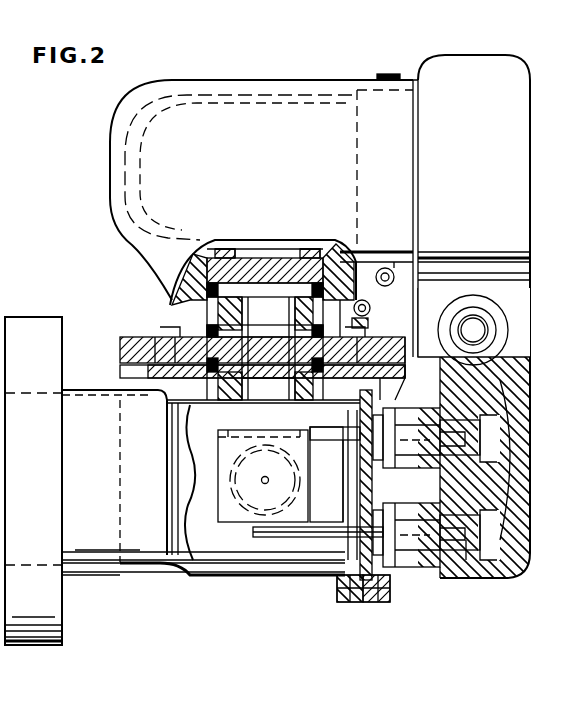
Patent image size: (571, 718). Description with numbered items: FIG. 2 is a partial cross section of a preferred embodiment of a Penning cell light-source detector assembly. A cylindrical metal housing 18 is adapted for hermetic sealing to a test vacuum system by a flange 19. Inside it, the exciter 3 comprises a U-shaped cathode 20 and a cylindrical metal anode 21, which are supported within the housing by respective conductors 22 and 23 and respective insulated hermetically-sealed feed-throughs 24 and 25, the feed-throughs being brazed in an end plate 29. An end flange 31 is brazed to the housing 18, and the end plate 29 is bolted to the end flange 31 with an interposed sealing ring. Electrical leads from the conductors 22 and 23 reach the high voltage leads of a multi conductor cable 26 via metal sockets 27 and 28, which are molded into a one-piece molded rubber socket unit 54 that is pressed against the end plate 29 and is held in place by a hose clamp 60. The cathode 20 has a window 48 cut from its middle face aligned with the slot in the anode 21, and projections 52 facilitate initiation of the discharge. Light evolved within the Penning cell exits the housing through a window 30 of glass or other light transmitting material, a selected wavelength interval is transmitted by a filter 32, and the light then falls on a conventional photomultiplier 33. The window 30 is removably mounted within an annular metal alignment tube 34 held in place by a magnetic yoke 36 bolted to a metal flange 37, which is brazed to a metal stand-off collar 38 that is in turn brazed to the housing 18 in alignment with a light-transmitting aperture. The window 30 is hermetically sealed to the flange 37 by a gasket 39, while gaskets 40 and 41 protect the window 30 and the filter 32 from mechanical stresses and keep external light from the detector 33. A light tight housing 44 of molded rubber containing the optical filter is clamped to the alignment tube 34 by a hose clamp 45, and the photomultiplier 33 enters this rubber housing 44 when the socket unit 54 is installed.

The exciter 3 is at (226, 535).
The cylindrical metal housing 18 is at (90, 540).
The flange 19 is at (62, 640).
The U-shaped cathode 20 is at (215, 452).
The cylindrical metal anode 21 is at (222, 480).
The conductor 22 is at (335, 485).
The conductor 23 is at (320, 537).
The insulated hermetically-sealed feed-through 24 is at (385, 452).
The insulated hermetically-sealed feed-through 25 is at (413, 572).
The multi conductor cable 26 is at (488, 330).
The metal socket 27 is at (455, 432).
The metal socket 28 is at (466, 540).
The end plate 29 is at (365, 602).
The window 30 is at (248, 390).
The end flange 31 is at (345, 602).
The filter 32 is at (270, 268).
The photomultiplier 33 is at (178, 100).
The annular metal alignment tube 34 is at (180, 302).
The magnetic yoke 36 is at (122, 345).
The metal flange 37 is at (122, 372).
The metal stand-off collar 38 is at (318, 393).
The gasket 39 is at (226, 397).
The gasket 40 is at (246, 312).
The gasket 41 is at (246, 272).
The light tight housing 44 is at (108, 128).
The hose clamp 45 is at (371, 306).
The window 48 is at (222, 437).
The projections 52 is at (263, 484).
The socket unit 54 is at (533, 80).
The hose clamp 60 is at (388, 74).